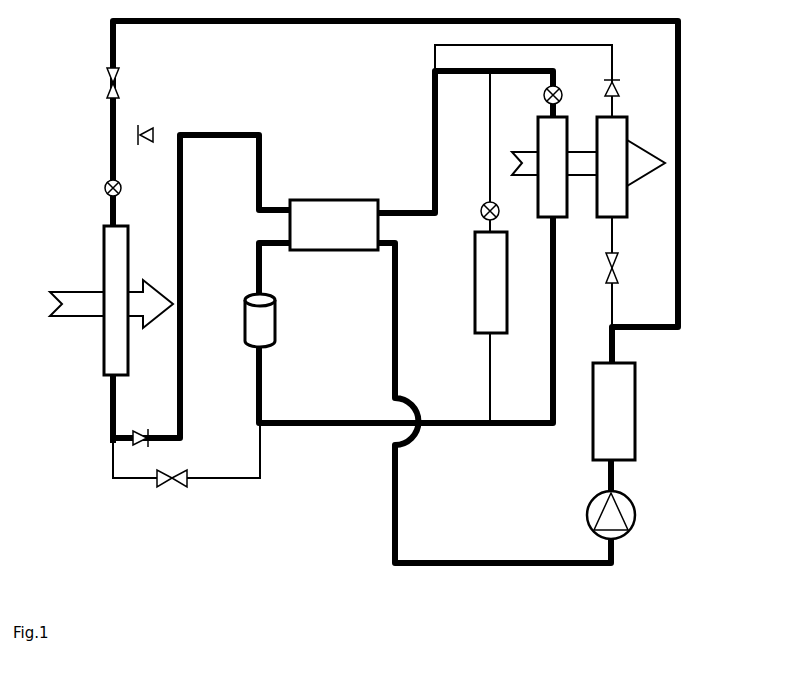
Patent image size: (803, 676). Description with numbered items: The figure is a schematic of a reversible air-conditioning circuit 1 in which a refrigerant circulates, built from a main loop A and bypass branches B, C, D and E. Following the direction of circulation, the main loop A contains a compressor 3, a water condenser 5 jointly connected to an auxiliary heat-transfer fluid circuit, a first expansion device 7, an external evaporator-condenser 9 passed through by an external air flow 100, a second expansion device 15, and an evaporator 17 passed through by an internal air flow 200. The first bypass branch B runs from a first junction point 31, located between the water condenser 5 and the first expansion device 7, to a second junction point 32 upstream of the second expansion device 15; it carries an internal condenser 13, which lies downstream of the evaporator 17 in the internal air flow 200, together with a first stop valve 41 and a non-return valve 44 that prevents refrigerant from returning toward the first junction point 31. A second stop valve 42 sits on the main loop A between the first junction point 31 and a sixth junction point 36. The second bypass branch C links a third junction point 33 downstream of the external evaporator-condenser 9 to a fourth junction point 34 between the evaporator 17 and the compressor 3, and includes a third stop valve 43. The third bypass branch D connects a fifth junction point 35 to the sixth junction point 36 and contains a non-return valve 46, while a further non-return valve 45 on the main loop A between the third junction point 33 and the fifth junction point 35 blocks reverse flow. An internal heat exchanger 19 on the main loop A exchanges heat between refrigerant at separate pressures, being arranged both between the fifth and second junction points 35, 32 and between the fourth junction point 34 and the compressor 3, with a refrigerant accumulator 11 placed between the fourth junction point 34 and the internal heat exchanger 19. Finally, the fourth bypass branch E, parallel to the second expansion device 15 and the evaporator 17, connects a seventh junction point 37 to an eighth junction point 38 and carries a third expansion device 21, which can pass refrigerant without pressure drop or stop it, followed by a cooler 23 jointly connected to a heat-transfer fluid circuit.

The reversible air-conditioning circuit 1 is at (335, 522).
The compressor 3 is at (636, 510).
The water condenser 5 is at (614, 411).
The first expansion device 7 is at (106, 186).
The external evaporator-condenser 9 is at (116, 300).
The refrigerant accumulator 11 is at (260, 320).
The internal condenser 13 is at (612, 167).
The second expansion device 15 is at (549, 103).
The evaporator 17 is at (552, 167).
The internal heat exchanger 19 is at (334, 225).
The third expansion device 21 is at (484, 208).
The cooler 23 is at (491, 282).
The first junction point 31 is at (620, 332).
The second junction point 32 is at (437, 70).
The third junction point 33 is at (112, 438).
The fourth junction point 34 is at (258, 425).
The fifth junction point 35 is at (182, 135).
The sixth junction point 36 is at (110, 135).
The seventh junction point 37 is at (490, 82).
The eighth junction point 38 is at (492, 428).
The first stop valve 41 is at (615, 262).
The second stop valve 42 is at (108, 78).
The third stop valve 43 is at (180, 485).
The non-return valve 44 is at (616, 90).
The non-return valve 45 is at (139, 436).
The non-return valve 46 is at (148, 129).
The external air flow 100 is at (80, 300).
The internal air flow 200 is at (590, 165).
The main loop A is at (420, 507).
The first bypass branch B is at (632, 302).
The second bypass branch C is at (130, 492).
The third bypass branch D is at (133, 113).
The fourth bypass branch E is at (420, 168).